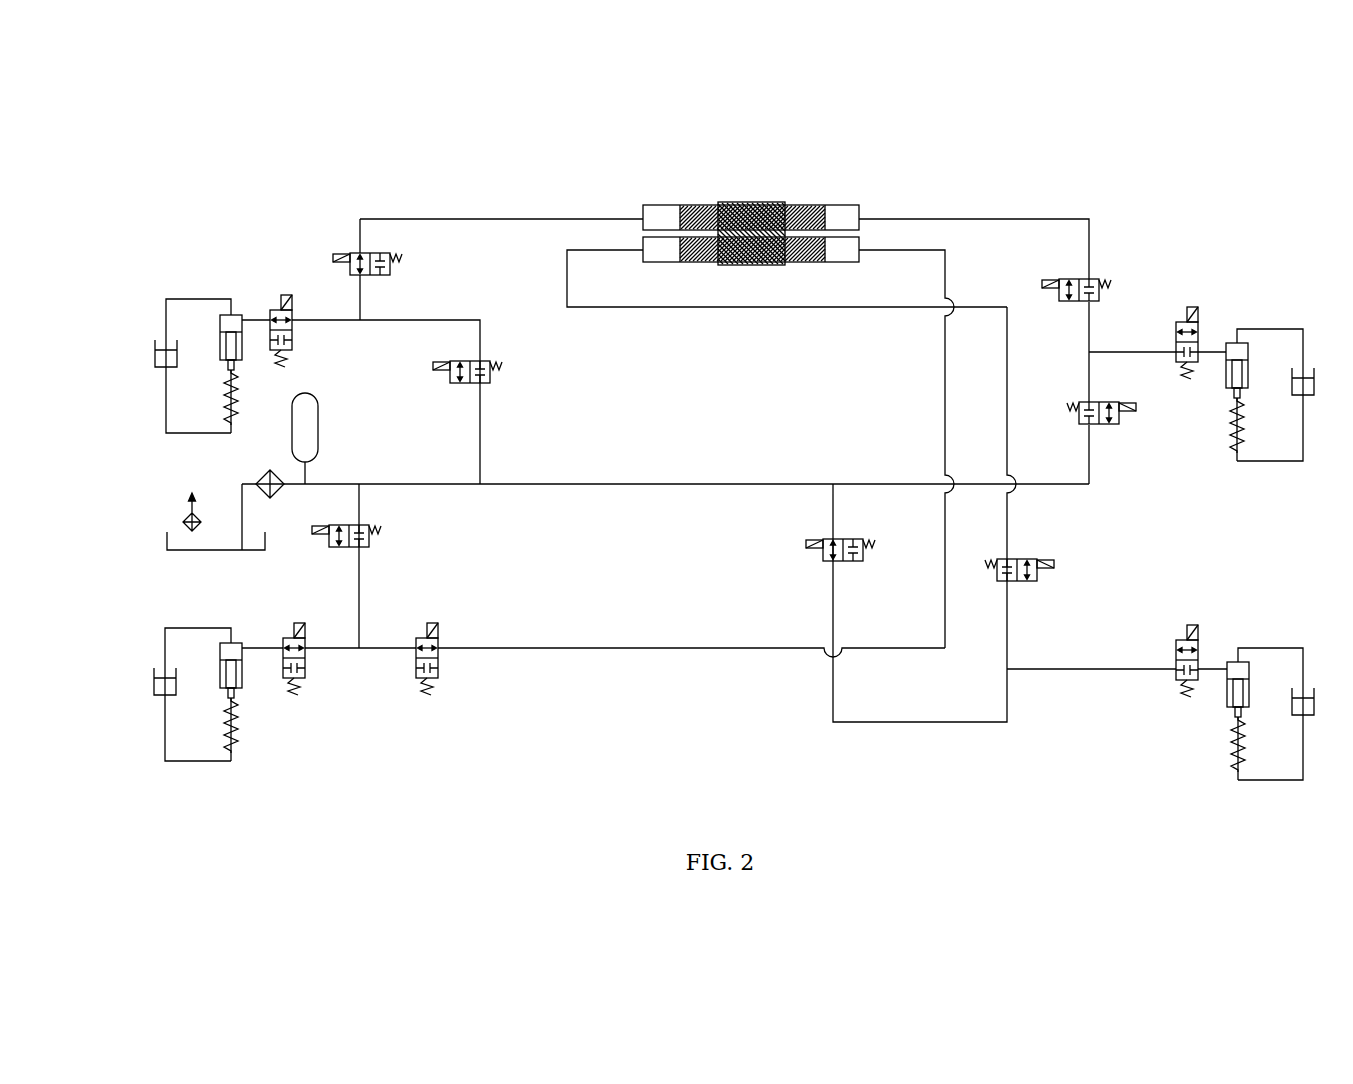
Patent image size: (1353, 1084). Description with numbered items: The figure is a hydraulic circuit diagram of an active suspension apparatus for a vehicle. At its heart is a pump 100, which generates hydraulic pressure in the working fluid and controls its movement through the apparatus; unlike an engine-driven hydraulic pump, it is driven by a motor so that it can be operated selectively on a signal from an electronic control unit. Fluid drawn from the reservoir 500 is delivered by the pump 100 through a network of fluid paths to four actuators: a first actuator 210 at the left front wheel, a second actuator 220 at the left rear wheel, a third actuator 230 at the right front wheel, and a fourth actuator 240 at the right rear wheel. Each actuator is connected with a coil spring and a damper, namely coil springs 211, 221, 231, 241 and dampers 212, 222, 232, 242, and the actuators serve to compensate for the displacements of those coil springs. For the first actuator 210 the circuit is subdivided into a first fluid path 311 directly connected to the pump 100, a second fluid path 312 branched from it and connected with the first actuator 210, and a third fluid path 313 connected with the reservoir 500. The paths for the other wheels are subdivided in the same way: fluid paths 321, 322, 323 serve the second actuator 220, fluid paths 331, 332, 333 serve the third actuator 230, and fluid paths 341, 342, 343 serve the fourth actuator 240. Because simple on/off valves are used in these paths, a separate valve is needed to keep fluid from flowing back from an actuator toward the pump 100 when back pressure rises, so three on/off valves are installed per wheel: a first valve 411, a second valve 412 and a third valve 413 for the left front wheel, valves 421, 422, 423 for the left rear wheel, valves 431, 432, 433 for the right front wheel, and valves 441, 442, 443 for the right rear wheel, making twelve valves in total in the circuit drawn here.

The pump 100 is at (665, 205).
The first actuator 210 is at (238, 315).
The coil spring 211 is at (230, 400).
The damper 212 is at (155, 355).
The second actuator 220 is at (232, 643).
The coil spring 221 is at (230, 728).
The damper 222 is at (155, 678).
The third actuator 230 is at (1243, 343).
The coil spring 231 is at (1244, 462).
The damper 232 is at (1293, 378).
The fourth actuator 240 is at (1244, 662).
The coil spring 241 is at (1244, 782).
The damper 242 is at (1296, 698).
The 1-1 fluid path 311 is at (473, 218).
The 1-2 fluid path 312 is at (318, 318).
The 1-3 fluid path 313 is at (478, 318).
The 2-1 fluid path 321 is at (524, 650).
The 2-2 fluid path 322 is at (333, 650).
The 2-3 fluid path 323 is at (362, 582).
The 3-1 fluid path 331 is at (968, 218).
The 3-2 fluid path 332 is at (1137, 350).
The 3-3 fluid path 333 is at (1092, 463).
The 4-1 fluid path 341 is at (712, 308).
The 4-2 fluid path 342 is at (1078, 671).
The 4-3 fluid path 343 is at (915, 724).
The 1-1 valve 411 is at (378, 253).
The 1-2 valve 412 is at (294, 340).
The 1-3 valve 413 is at (492, 378).
The 2-1 valve 421 is at (418, 680).
The 2-2 valve 422 is at (289, 680).
The 2-3 valve 423 is at (370, 535).
The 3-1 valve 431 is at (1098, 280).
The 3-2 valve 432 is at (1195, 322).
The 3-3 valve 433 is at (1122, 412).
The 4-1 valve 441 is at (1052, 568).
The 4-2 valve 442 is at (1187, 625).
The 4-3 valve 443 is at (808, 548).
The reservoir 500 is at (186, 512).